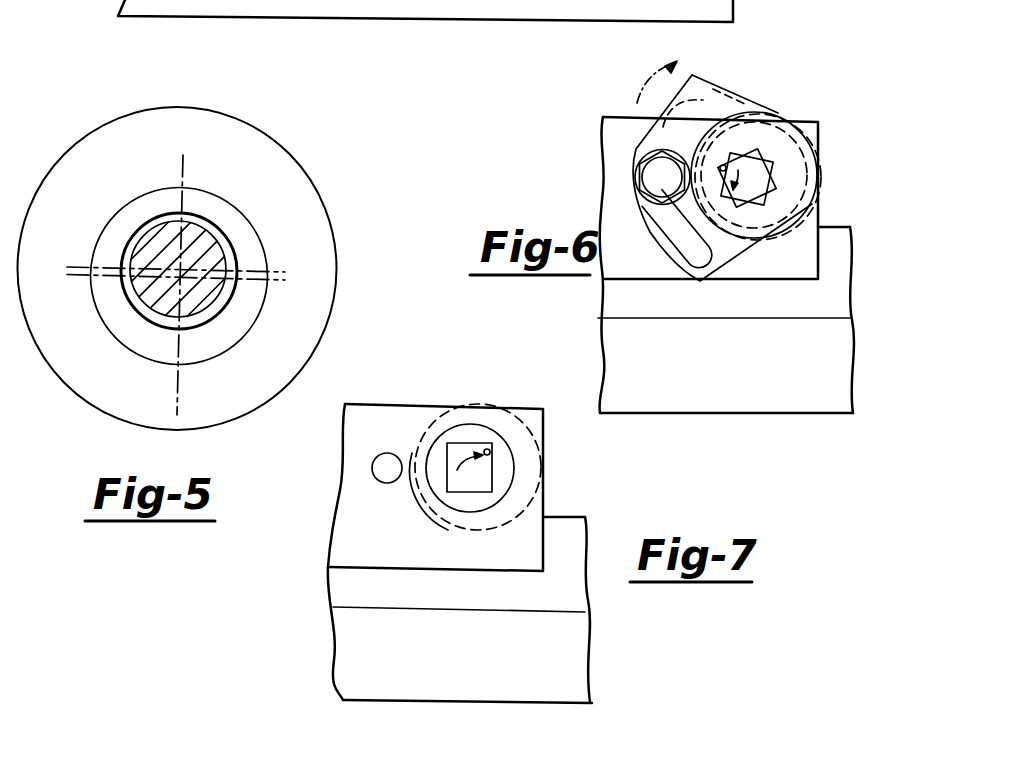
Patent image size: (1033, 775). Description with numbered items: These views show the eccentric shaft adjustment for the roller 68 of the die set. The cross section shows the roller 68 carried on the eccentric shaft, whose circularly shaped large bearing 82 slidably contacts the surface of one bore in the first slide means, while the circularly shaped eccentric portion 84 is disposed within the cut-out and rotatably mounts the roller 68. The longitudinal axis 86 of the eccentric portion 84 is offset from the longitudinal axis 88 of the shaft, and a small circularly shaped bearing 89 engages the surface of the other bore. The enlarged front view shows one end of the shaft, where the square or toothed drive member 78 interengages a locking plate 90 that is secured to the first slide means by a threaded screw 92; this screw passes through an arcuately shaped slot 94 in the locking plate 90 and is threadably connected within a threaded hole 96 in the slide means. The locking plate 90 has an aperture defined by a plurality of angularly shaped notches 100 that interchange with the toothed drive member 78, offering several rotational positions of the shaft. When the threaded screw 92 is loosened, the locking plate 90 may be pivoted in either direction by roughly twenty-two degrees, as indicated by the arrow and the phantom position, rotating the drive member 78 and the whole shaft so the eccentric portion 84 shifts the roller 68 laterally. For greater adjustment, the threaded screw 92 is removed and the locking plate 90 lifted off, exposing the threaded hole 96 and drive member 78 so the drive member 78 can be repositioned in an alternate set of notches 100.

In FIG. 5, the roller 68 is at (83, 170).
In FIG. 5, the large bearing 82 is at (140, 347).
In FIG. 5, the eccentric portion 84 is at (188, 220).
In FIG. 5, the longitudinal axis of eccentric portion 86 is at (180, 270).
In FIG. 5, the longitudinal axis of shaft 88 is at (180, 280).
In FIG. 5, the small bearing 89 is at (205, 250).
In FIG. 6, the locking plate 90 is at (685, 138).
In FIG. 6, the threaded screw 92 is at (645, 175).
In FIG. 6, the arcuately shaped slot 94 is at (680, 238).
In FIG. 6, the toothed drive member 78 is at (760, 167).
In FIG. 7, the toothed drive member 78 is at (458, 450).
In FIG. 6, the notches 100 is at (740, 148).
In FIG. 7, the threaded hole 96 is at (388, 458).